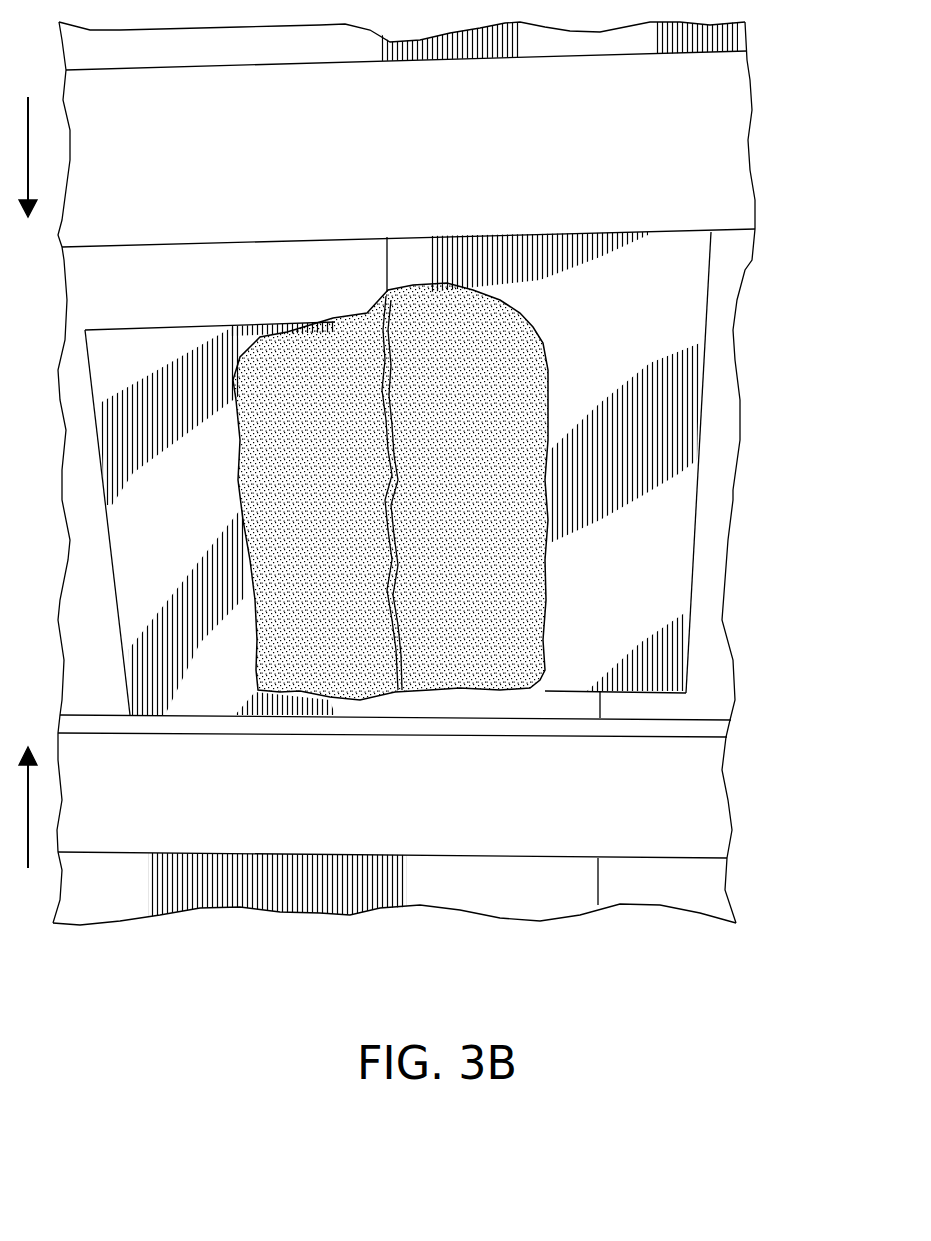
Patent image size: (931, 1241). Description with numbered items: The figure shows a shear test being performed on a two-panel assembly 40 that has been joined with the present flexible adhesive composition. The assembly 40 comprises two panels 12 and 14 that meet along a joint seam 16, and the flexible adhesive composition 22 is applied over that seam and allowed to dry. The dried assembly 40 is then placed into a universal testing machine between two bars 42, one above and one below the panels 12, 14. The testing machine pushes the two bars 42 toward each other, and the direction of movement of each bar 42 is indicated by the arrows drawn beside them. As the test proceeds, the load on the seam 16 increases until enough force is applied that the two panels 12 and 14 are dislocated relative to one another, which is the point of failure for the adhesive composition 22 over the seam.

The panel 12 is at (145, 522).
The panel 14 is at (658, 612).
The seam / crack 16 is at (398, 693).
The flexible adhesive composition 22 is at (532, 330).
The two-panel assembly 40 is at (764, 488).
The bars 42 is at (708, 105).